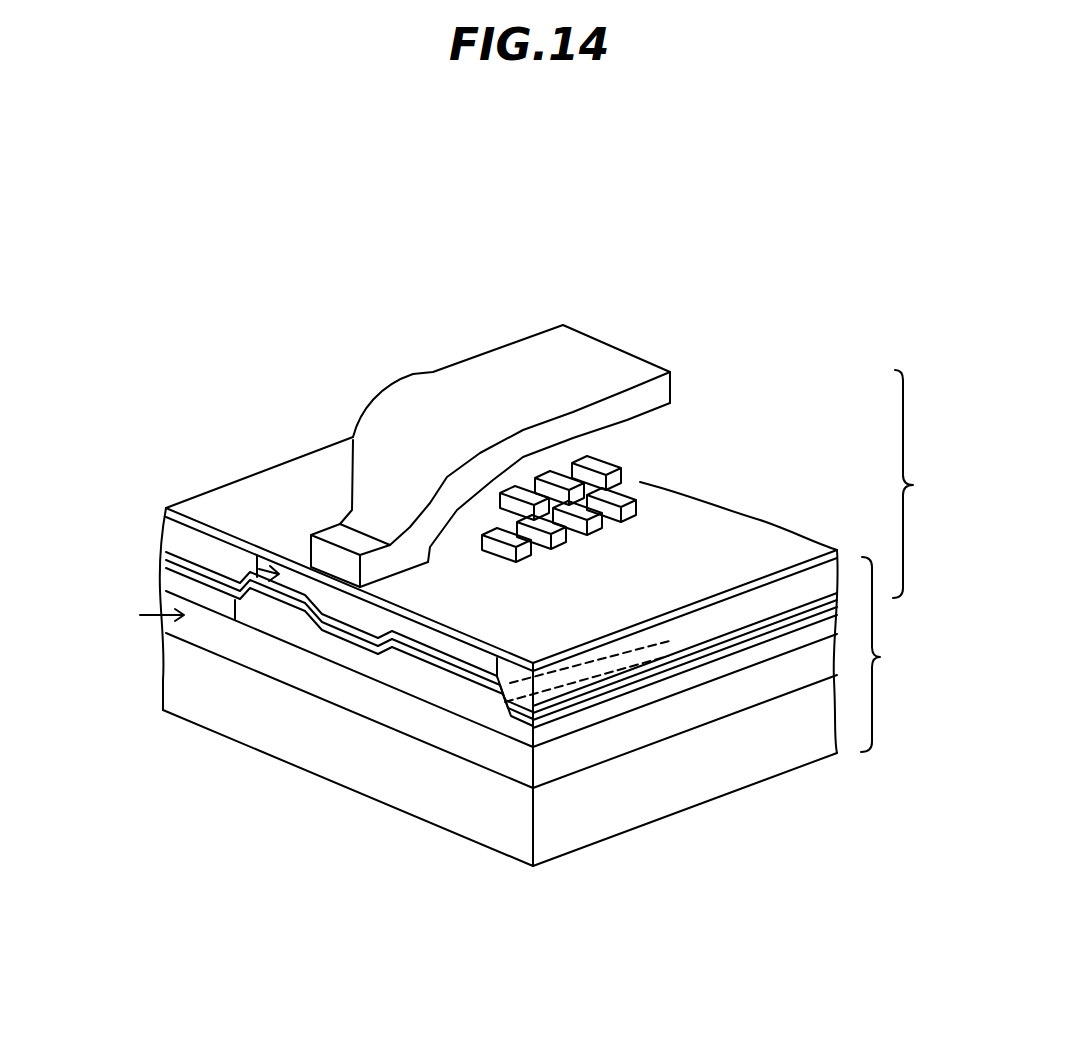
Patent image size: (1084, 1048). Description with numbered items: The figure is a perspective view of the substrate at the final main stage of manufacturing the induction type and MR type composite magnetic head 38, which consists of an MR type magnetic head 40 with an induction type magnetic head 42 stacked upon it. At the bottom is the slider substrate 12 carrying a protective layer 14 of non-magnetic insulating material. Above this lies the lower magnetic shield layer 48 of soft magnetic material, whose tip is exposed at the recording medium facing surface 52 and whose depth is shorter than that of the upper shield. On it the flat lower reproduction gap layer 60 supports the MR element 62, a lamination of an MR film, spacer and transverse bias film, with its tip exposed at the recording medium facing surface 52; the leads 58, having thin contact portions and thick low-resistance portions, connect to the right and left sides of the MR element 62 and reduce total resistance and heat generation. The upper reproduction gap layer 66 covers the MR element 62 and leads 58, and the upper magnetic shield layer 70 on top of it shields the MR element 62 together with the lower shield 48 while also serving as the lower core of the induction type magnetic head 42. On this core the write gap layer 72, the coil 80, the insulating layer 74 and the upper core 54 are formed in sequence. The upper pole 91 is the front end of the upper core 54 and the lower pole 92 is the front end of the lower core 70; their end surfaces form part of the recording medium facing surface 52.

The induction type and MR type composite magnetic head 38 is at (640, 287).
The slider substrate 12 is at (185, 675).
The protective layer 14 is at (498, 758).
The MR type magnetic head 40 is at (894, 654).
The induction type magnetic head 42 is at (926, 484).
The lower magnetic shield layer 48 is at (372, 668).
The recording medium facing surface 52 is at (140, 615).
The upper core 54 is at (452, 397).
The leads 58 is at (273, 607).
The lower reproduction gap layer 60 is at (737, 653).
The MR element 62 is at (332, 632).
The upper reproduction gap layer 66 is at (653, 673).
The upper magnetic shield layer 70 is at (257, 557).
The write gap layer 72 is at (238, 506).
The insulating layer 74 is at (627, 438).
The coil 80 is at (621, 480).
The upper pole 91 is at (327, 557).
The lower pole 92 is at (363, 617).